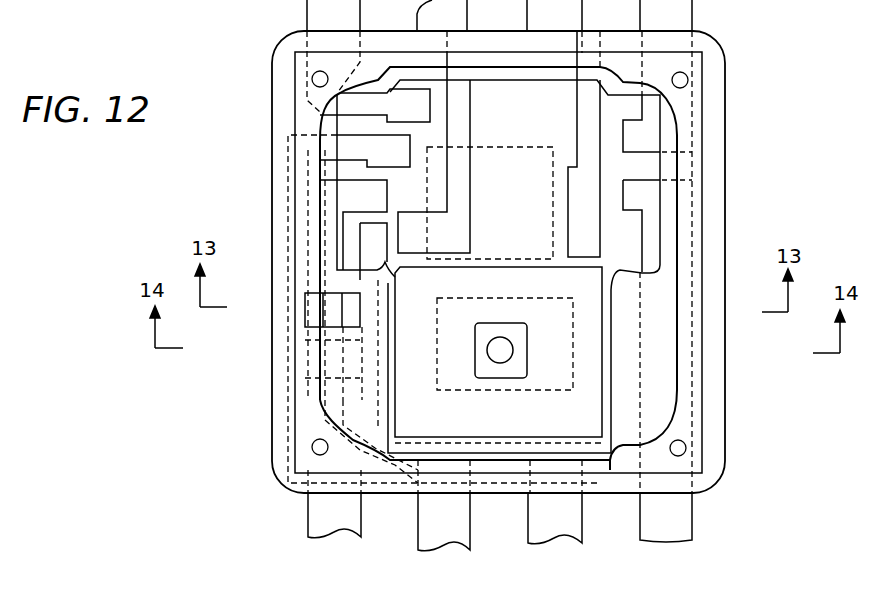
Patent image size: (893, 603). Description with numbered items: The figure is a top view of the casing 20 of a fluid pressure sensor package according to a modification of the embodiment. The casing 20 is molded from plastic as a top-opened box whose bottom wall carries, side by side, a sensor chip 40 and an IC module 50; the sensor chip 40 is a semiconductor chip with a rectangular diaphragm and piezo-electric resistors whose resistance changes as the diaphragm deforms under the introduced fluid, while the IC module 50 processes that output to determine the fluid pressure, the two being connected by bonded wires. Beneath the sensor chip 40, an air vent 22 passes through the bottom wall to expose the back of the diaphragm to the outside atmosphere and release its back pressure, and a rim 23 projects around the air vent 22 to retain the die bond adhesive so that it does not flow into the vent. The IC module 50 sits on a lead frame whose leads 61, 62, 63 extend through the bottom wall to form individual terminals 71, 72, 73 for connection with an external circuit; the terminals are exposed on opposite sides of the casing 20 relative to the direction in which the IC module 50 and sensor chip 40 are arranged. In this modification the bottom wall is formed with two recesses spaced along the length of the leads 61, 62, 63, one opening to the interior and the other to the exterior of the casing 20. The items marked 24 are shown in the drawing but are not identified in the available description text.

The casing 20 is at (272, 466).
The air vent 22 is at (497, 362).
The rim 23 is at (523, 362).
The passive components 24 is at (304, 312).
The sensor chip 40 is at (440, 372).
The IC module 50 is at (533, 181).
The lead 61 is at (287, 138).
The lead 62 is at (305, 197).
The lead 63 is at (322, 247).
The terminal 71 is at (347, 522).
The terminal 72 is at (446, 524).
The terminal 73 is at (557, 522).